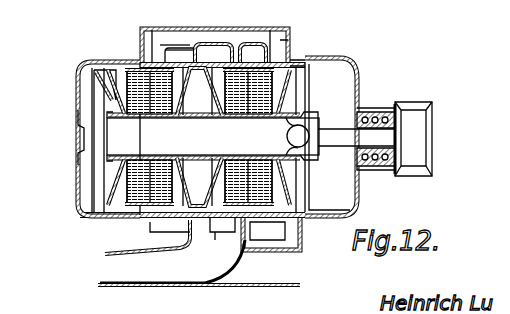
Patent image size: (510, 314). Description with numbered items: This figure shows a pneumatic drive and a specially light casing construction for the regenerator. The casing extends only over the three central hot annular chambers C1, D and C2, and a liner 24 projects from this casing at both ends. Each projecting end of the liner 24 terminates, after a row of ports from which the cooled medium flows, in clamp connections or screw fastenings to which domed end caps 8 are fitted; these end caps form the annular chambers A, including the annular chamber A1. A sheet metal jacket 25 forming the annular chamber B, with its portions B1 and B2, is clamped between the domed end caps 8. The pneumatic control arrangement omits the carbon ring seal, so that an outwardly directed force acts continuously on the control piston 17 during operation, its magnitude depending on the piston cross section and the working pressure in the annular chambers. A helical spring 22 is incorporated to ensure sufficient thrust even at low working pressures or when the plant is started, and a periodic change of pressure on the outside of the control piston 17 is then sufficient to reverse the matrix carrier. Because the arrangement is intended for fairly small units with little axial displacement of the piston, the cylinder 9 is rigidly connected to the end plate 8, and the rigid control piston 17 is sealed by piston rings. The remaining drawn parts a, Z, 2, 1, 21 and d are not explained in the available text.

The annular chamber B1 is at (154, 60).
The annular chamber C1 is at (177, 52).
The sheet metal jacket 25 is at (176, 58).
The annular chamber D is at (215, 56).
The annular chamber B is at (238, 56).
The annular chamber C2 is at (253, 56).
The annular chamber B2 is at (286, 62).
The annular chamber A is at (323, 76).
The annular chamber A1 is at (110, 70).
The end plate 8 is at (78, 86).
The housing recess a is at (78, 140).
The armature / rotor Z is at (260, 145).
The shaft end 2 is at (314, 114).
The helical spring 22 is at (376, 112).
The control piston 17 is at (392, 170).
The cylinder 9 is at (416, 112).
The liner 24 is at (218, 220).
The mounting foot 1 is at (252, 240).
The lower cover 21 is at (126, 226).
The base line d is at (146, 280).